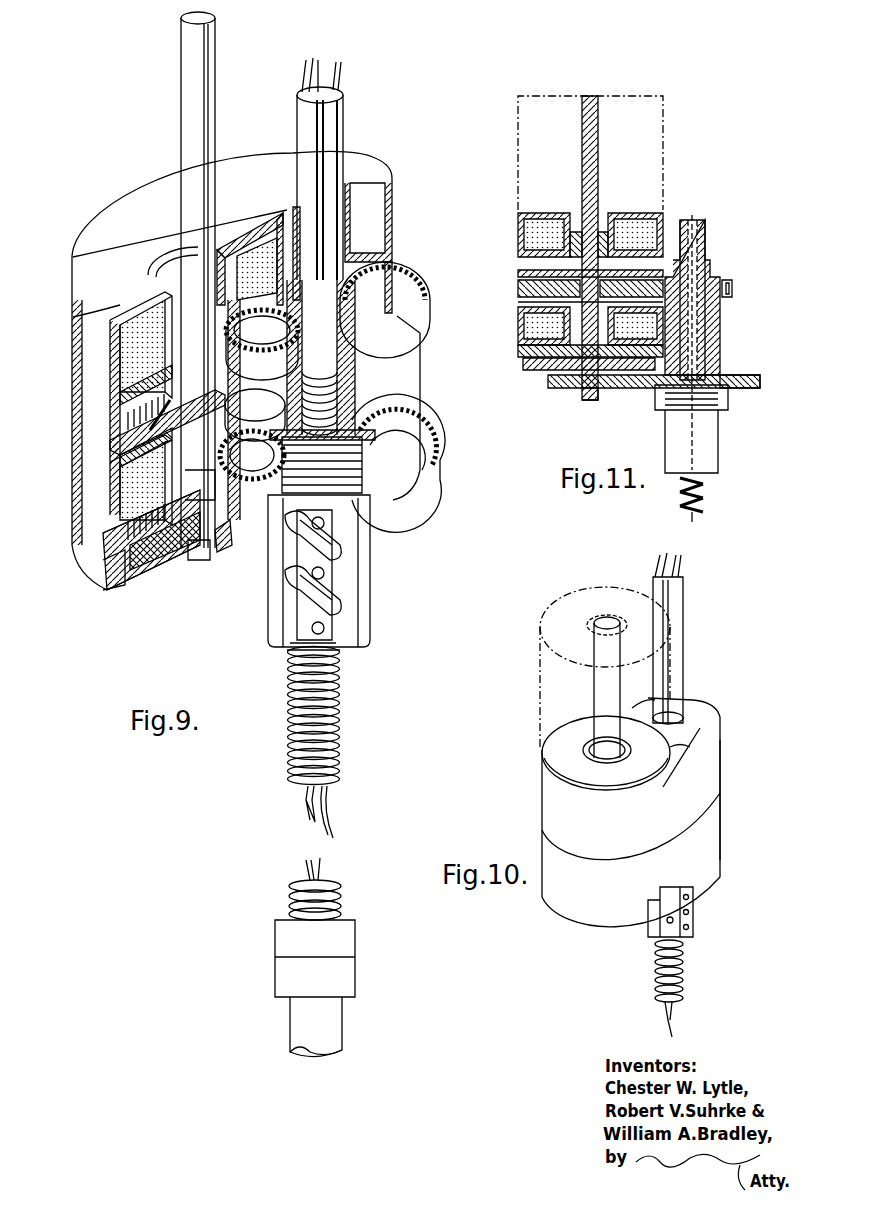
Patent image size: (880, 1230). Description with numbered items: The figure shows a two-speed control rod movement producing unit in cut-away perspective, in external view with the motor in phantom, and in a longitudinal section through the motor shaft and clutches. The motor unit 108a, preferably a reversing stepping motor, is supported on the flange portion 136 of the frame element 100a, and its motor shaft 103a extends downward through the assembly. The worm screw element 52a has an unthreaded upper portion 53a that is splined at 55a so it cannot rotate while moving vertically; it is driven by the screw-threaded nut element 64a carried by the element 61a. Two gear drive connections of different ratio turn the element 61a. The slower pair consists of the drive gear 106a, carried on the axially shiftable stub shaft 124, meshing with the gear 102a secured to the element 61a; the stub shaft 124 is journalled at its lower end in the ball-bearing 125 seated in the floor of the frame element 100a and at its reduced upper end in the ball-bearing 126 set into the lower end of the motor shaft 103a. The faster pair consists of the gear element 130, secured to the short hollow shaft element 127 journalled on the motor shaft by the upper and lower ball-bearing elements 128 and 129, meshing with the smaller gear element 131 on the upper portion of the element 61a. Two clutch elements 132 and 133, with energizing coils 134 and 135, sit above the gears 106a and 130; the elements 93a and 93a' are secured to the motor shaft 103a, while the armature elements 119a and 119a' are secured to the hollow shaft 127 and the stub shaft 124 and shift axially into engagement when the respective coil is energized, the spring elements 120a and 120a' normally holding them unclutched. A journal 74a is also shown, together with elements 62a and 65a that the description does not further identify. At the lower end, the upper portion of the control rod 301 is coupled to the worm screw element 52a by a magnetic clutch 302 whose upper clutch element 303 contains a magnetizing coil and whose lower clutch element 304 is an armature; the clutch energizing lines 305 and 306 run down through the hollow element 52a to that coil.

In FIG. 9, the worm screw element 52a is at (340, 726).
In FIG. 11, the worm screw element 52a is at (706, 498).
In FIG. 10, the worm screw element 52a is at (685, 970).
In FIG. 9, the unthreaded upper portion of worm screw rod 53a is at (330, 168).
In FIG. 11, the unthreaded upper portion of worm screw rod 53a is at (700, 242).
In FIG. 10, the unthreaded upper portion of worm screw rod 53a is at (681, 614).
In FIG. 9, the spline 55a is at (318, 150).
In FIG. 9, the nut-carrying element 61a is at (360, 420).
In FIG. 11, the nut-carrying element 61a is at (716, 343).
In FIG. 9, the gear ring 62a is at (400, 456).
In FIG. 9, the screw-threaded nut element 64a is at (330, 478).
In FIG. 11, the screw-threaded nut element 64a is at (705, 405).
In FIG. 9, the terminal block 65a is at (322, 607).
In FIG. 10, the terminal block 65a is at (690, 915).
In FIG. 9, the journal 74a is at (406, 272).
In FIG. 9, the clutch element 93a is at (212, 410).
In FIG. 9, the clutch element 93a' is at (199, 461).
In FIG. 9, the frame element 100a is at (104, 594).
In FIG. 10, the frame element 100a is at (606, 935).
In FIG. 9, the gear 102a is at (380, 428).
In FIG. 11, the gear 102a is at (745, 376).
In FIG. 9, the motor shaft 103a is at (188, 222).
In FIG. 11, the motor shaft 103a is at (582, 166).
In FIG. 10, the motor shaft 103a is at (608, 620).
In FIG. 9, the drive gear 106a is at (160, 570).
In FIG. 11, the drive gear 106a is at (548, 388).
In FIG. 11, the motor unit 108a is at (535, 149).
In FIG. 10, the motor unit 108a is at (546, 706).
In FIG. 9, the armature element 119a is at (96, 412).
In FIG. 9, the armature element 119a' is at (96, 522).
In FIG. 9, the spring element 120a is at (155, 415).
In FIG. 9, the spring element 120a' is at (121, 587).
In FIG. 9, the stub shaft 124 is at (198, 545).
In FIG. 11, the stub shaft 124 is at (592, 400).
In FIG. 9, the ball-bearing 125 is at (220, 540).
In FIG. 11, the ball-bearing 126 is at (580, 388).
In FIG. 9, the short hollow shaft element 127 is at (175, 395).
In FIG. 11, the short hollow shaft element 127 is at (560, 302).
In FIG. 9, the upper ball-bearing element 128 is at (236, 345).
In FIG. 9, the lower ball-bearing element 129 is at (176, 440).
In FIG. 9, the gear element 130 is at (150, 428).
In FIG. 11, the gear element 130 is at (530, 292).
In FIG. 9, the gear element 131 is at (378, 306).
In FIG. 11, the gear element 131 is at (740, 293).
In FIG. 9, the clutch element 132 is at (83, 475).
In FIG. 11, the clutch element 132 is at (510, 330).
In FIG. 9, the clutch element 133 is at (78, 333).
In FIG. 11, the clutch element 133 is at (510, 229).
In FIG. 10, the clutch element 133 is at (559, 761).
In FIG. 9, the energizing coil 134 is at (128, 470).
In FIG. 9, the energizing coil 135 is at (128, 350).
In FIG. 9, the flange portion 136 is at (60, 395).
In FIG. 10, the flange portion 136 is at (730, 773).
In FIG. 9, the control rod 301 is at (343, 1031).
In FIG. 9, the magnetic clutch 302 is at (368, 961).
In FIG. 9, the upper clutch element 303 is at (345, 940).
In FIG. 9, the lower clutch element 304 is at (345, 986).
In FIG. 9, the clutch energizing line 305 is at (318, 800).
In FIG. 9, the clutch energizing line 306 is at (328, 826).